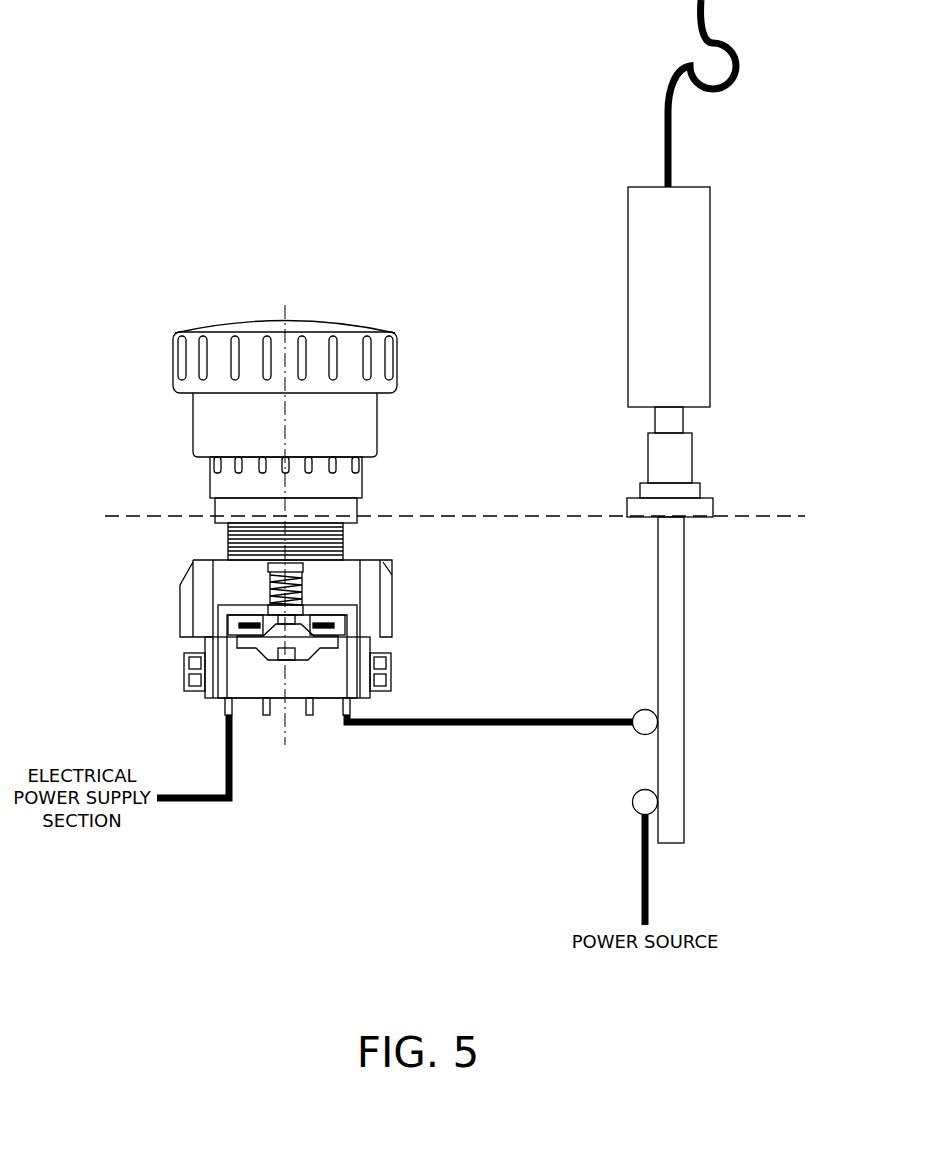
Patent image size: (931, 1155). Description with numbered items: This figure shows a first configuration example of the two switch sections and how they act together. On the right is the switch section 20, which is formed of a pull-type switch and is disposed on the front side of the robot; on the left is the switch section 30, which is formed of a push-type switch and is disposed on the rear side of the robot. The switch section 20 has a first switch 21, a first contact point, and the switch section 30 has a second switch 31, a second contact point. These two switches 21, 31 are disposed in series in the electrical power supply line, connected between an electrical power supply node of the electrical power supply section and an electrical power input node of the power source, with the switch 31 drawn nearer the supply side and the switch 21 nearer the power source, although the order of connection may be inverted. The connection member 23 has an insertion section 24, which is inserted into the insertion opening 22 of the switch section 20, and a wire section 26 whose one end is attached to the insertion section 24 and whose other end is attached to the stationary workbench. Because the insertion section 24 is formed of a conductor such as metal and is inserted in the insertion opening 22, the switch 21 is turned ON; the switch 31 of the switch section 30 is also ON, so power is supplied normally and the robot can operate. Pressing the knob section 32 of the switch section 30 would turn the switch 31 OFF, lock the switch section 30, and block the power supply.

The switch section 20 is at (756, 754).
The first switch 21 is at (635, 763).
The insertion opening 22 is at (708, 527).
The connection member 23 is at (758, 410).
The insertion section 24 is at (687, 632).
The wire section 26 is at (742, 66).
The switch section 30 is at (228, 305).
The second switch 31 is at (235, 628).
The knob section 32 is at (340, 320).